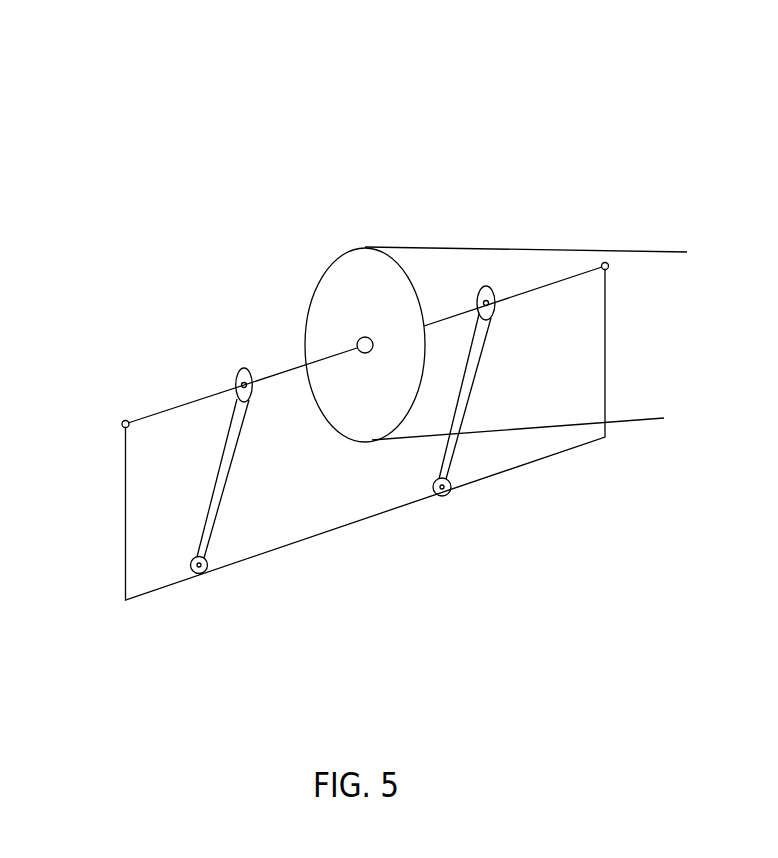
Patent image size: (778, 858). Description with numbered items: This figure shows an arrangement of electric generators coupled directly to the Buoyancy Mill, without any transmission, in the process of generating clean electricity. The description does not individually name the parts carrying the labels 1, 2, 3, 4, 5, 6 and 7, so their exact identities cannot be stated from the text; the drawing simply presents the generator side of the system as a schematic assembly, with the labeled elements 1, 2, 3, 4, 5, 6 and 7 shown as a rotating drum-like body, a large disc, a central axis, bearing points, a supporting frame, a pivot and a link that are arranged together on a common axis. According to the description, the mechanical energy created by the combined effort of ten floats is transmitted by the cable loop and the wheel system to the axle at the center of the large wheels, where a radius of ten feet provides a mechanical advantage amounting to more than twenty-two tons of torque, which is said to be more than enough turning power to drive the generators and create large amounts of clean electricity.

The cylindrical housing 1 is at (364, 225).
The disc 2 is at (233, 254).
The shaft 3 is at (322, 277).
The bearing 4 is at (147, 285).
The frame plate 5 is at (122, 425).
The pivot 6 is at (125, 602).
The link 7 is at (145, 566).